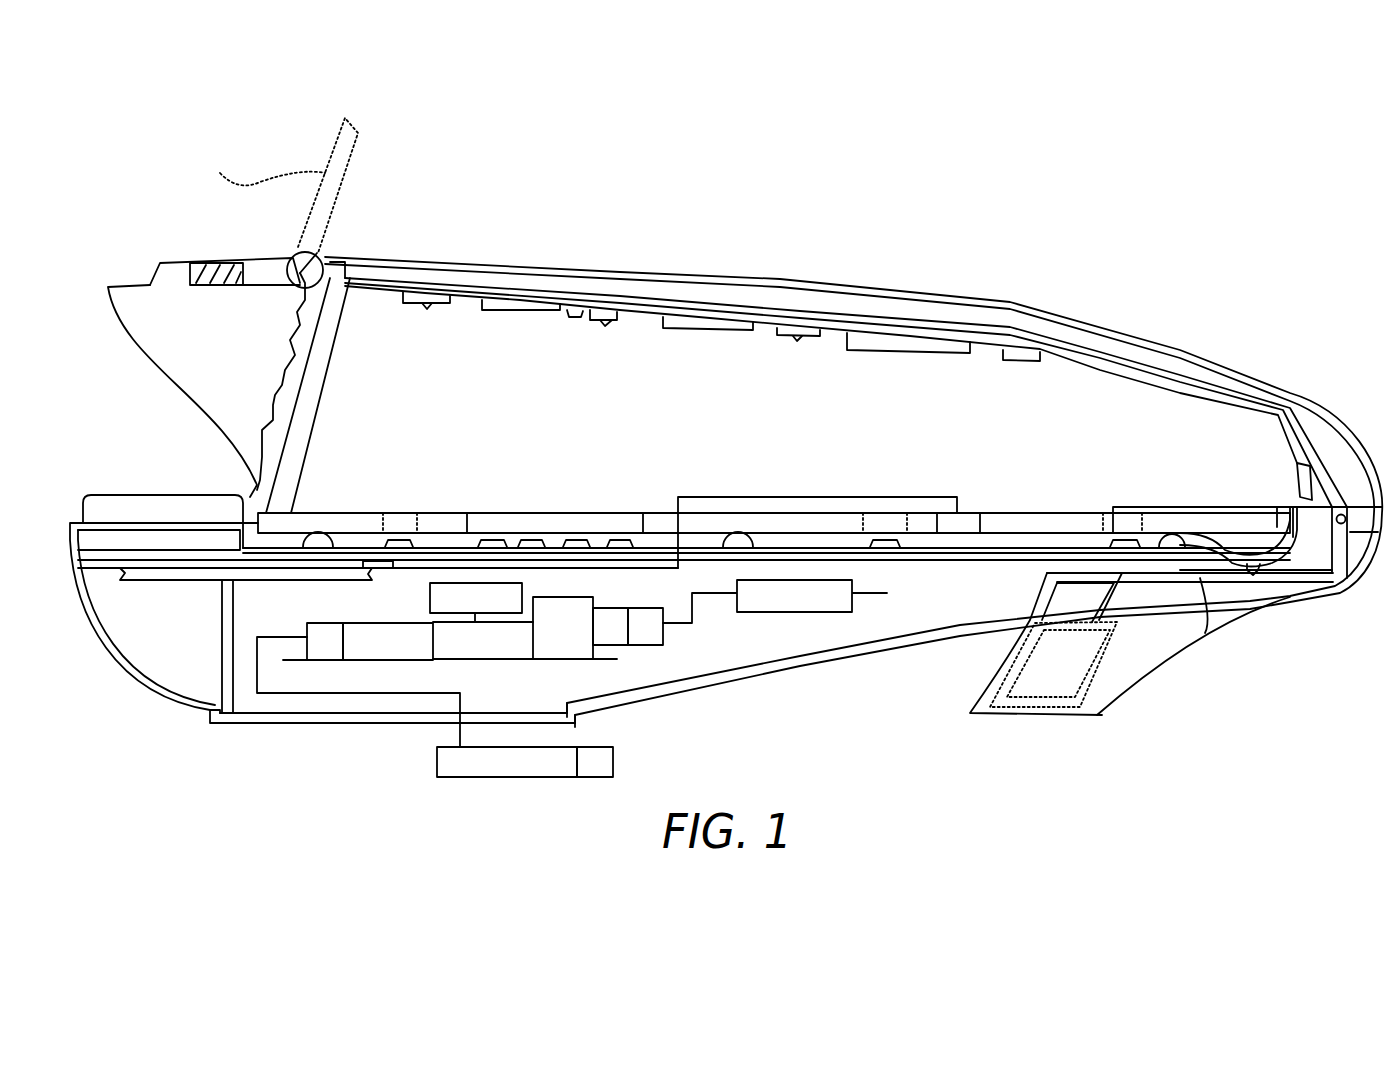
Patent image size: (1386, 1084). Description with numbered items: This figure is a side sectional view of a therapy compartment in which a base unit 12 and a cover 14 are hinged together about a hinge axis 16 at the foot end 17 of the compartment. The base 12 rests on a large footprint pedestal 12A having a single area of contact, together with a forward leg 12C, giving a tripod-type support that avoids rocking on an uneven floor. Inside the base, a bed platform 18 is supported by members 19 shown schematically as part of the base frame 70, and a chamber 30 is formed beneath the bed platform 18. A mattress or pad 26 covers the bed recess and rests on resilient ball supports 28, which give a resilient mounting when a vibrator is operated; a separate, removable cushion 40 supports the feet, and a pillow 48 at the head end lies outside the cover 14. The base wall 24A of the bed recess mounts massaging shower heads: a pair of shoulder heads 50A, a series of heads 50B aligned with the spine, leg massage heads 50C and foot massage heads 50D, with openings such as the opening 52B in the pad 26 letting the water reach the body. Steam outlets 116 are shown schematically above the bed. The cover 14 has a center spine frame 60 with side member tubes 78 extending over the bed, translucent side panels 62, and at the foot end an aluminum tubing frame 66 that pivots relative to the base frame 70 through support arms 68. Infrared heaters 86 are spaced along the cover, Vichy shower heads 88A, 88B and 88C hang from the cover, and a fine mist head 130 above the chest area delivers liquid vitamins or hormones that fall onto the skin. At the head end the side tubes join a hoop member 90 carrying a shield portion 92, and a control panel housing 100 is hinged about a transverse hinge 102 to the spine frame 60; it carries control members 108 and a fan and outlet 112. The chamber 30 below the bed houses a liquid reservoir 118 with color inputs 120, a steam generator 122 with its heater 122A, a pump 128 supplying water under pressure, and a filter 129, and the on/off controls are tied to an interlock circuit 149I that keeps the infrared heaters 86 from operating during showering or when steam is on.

The base unit 12 is at (123, 662).
The pedestal 12A is at (370, 732).
The forward leg 12C is at (1030, 718).
The cover 14 is at (805, 281).
The hinge axis 16 is at (1345, 512).
The foot end 17 is at (1280, 614).
The bed platform 18 is at (393, 563).
The support members 19 is at (268, 581).
The base wall 24A is at (856, 533).
The support mattress or pad 26 is at (323, 537).
The resilient ball supports 28 is at (747, 533).
The chamber 30 is at (234, 684).
The foot cushion 40 is at (1068, 503).
The pillow 48 is at (187, 507).
The shoulder massaging shower heads 50A is at (410, 510).
The spine massaging shower heads 50B is at (535, 533).
The leg massage shower heads 50C is at (897, 533).
The foot massage shower heads 50D is at (1130, 533).
The pad opening 52B is at (480, 537).
The center spine frame 60 is at (680, 280).
The side panels 62 is at (523, 337).
The aluminum tubing frame 66 is at (1308, 418).
The support arms 68 is at (1340, 540).
The base frame 70 is at (223, 633).
The side member tubes 78 is at (958, 320).
The infrared heaters 86 is at (500, 310).
The shower head 88A is at (404, 324).
The shower head 88B is at (608, 327).
The shower head 88C is at (784, 343).
The hoop member 90 is at (308, 410).
The shield portion 92 is at (140, 345).
The control panel housing 100 is at (185, 262).
The transverse hinge 102 is at (323, 257).
The control members 108 is at (298, 255).
The fan and outlet 112 is at (222, 285).
The steam outlets 116 is at (987, 513).
The liquid reservoir 118 is at (568, 657).
The color inputs 120 is at (453, 613).
The steam generator 122 is at (388, 662).
The steam generator heater 122A is at (327, 662).
The pump 128 is at (652, 643).
The filter 129 is at (613, 645).
The mist head 130 is at (578, 318).
The interlock circuit 149I is at (437, 755).